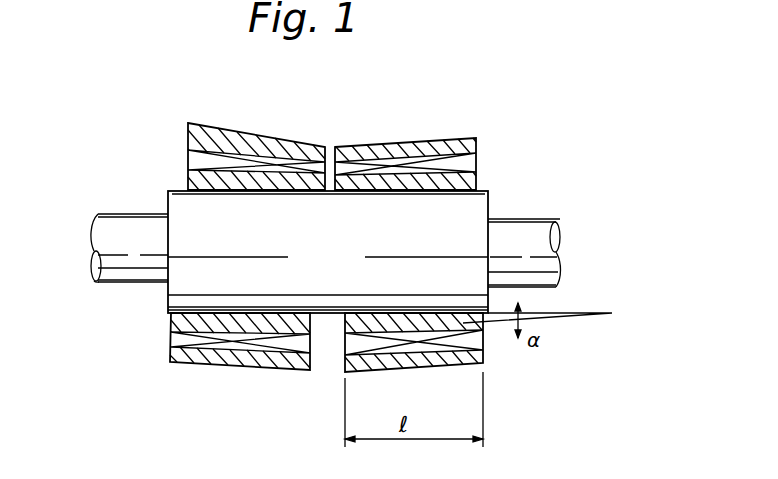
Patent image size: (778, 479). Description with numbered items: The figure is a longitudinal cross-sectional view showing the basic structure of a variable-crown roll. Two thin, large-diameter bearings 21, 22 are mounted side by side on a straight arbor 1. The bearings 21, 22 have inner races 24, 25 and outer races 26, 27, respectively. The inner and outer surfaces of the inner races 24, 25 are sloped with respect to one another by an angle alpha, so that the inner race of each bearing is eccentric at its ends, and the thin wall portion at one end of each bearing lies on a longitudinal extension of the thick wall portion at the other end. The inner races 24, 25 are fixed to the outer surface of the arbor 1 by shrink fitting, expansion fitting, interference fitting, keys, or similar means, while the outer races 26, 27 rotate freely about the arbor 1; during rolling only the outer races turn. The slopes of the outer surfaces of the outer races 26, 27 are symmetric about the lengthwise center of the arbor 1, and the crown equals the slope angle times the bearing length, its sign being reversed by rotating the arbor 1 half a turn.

The straight arbor 1 is at (544, 223).
The bearing 21 is at (466, 161).
The bearing 22 is at (189, 156).
The inner race 24 is at (468, 180).
The inner race 25 is at (187, 179).
The outer race 26 is at (463, 141).
The outer race 27 is at (191, 131).